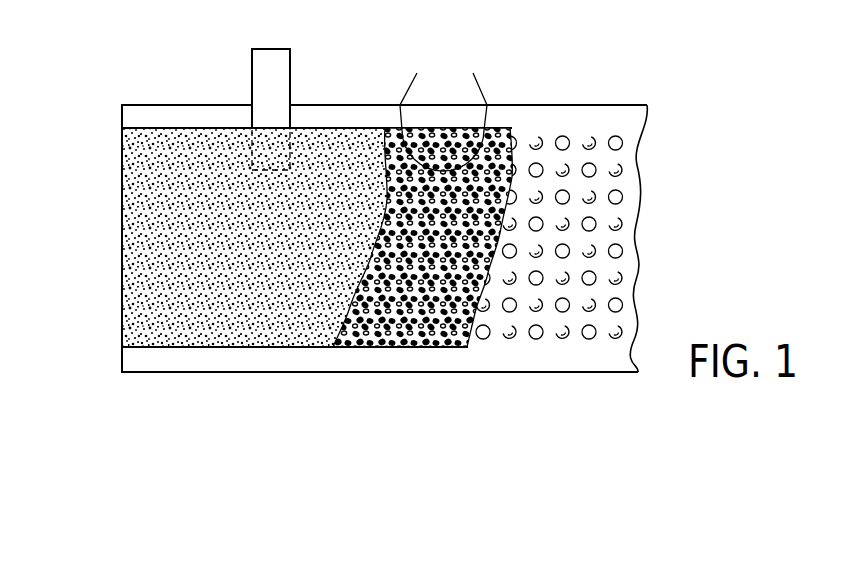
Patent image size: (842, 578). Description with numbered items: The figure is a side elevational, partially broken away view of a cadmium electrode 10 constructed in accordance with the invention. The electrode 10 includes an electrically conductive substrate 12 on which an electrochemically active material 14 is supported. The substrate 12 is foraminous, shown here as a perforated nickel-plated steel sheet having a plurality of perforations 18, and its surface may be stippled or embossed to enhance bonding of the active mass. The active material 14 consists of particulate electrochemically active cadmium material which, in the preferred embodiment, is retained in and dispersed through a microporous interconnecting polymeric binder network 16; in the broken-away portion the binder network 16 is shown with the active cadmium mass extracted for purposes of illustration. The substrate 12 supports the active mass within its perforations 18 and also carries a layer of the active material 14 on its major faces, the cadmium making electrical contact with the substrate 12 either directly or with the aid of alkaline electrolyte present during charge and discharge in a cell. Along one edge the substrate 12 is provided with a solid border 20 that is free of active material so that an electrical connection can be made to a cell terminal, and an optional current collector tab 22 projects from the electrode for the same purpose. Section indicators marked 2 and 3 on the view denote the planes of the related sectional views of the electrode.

The cadmium electrode 10 is at (655, 178).
The electrically conductive substrate 12 is at (627, 258).
The electrochemically active material 14 is at (320, 145).
The microporous interconnecting polymeric binder network 16 is at (397, 340).
The perforations 18 is at (623, 303).
The border 20 is at (228, 358).
The current collector tab 22 is at (267, 73).
The section 3 detail indicator 3 is at (414, 90).
The section line 2- 2 is at (83, 262).